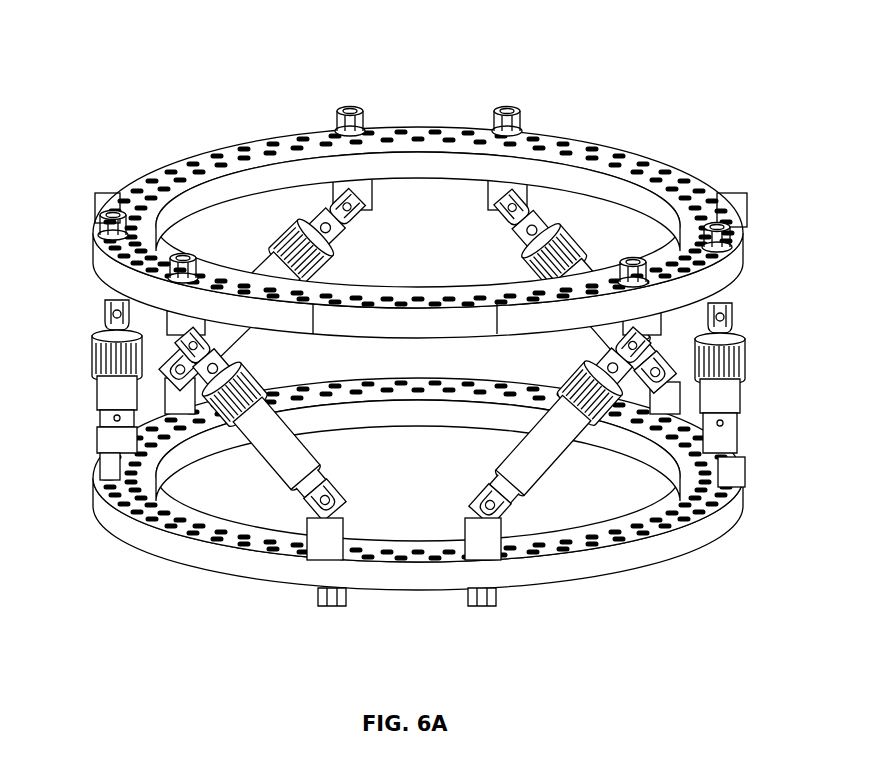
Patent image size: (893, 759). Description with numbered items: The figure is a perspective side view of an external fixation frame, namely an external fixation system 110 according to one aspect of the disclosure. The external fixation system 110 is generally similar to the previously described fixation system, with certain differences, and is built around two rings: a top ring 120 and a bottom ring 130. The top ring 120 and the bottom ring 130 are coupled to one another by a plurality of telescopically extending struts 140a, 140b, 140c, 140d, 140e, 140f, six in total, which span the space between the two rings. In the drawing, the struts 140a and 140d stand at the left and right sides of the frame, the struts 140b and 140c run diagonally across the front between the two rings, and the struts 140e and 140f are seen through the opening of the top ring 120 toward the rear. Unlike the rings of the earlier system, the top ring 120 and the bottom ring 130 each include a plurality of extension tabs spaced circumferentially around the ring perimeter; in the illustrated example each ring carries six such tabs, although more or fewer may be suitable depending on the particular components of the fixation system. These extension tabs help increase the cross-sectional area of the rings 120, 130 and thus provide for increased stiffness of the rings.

The external fixation system 110 is at (158, 45).
The top ring 120 is at (703, 177).
The bottom ring 130 is at (150, 513).
The telescopically extending strut 140a is at (107, 295).
The telescopically extending strut 140b is at (283, 473).
The telescopically extending strut 140c is at (533, 463).
The telescopically extending strut 140d is at (733, 307).
The telescopically extending strut 140e is at (527, 230).
The telescopically extending strut 140f is at (327, 210).